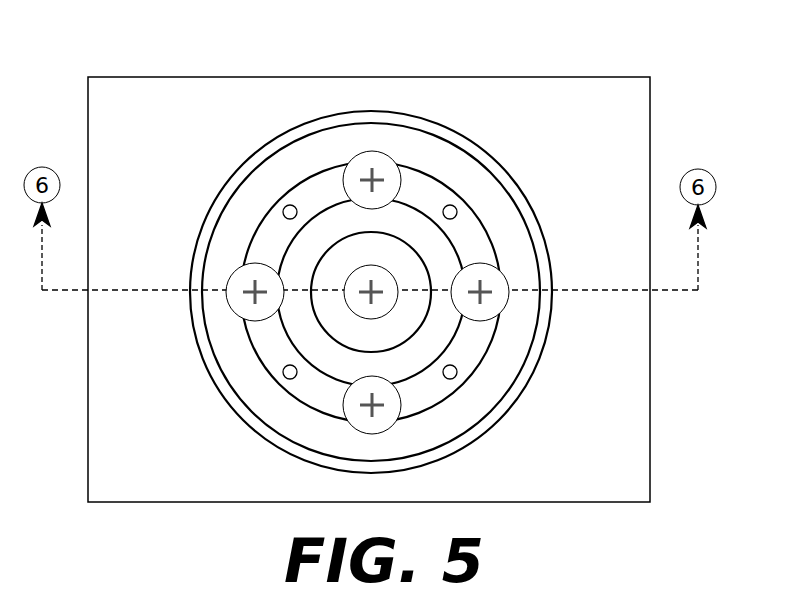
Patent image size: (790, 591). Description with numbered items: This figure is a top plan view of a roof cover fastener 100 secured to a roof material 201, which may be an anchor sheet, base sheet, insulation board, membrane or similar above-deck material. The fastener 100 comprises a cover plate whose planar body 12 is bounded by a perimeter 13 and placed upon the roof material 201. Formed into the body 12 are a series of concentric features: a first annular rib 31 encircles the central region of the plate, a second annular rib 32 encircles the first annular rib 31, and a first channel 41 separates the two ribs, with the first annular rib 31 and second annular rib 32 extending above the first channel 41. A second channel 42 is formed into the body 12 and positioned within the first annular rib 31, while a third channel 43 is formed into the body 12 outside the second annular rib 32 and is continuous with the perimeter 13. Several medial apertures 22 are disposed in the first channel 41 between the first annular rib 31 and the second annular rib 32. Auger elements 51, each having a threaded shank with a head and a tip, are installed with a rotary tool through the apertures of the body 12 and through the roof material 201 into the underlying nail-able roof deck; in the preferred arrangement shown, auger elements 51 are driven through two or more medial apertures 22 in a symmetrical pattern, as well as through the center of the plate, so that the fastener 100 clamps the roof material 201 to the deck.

The roof cover fastener 100 is at (373, 272).
The roof material 201 is at (607, 110).
The auger element 51 is at (377, 152).
The second channel 42 is at (410, 277).
The third channel 43 is at (200, 250).
The perimeter 13 is at (192, 323).
The body 12 is at (552, 323).
The first annular rib 31 is at (300, 327).
The first channel 41 is at (473, 343).
The second annular rib 32 is at (305, 422).
The medial aperture 22 is at (284, 206).